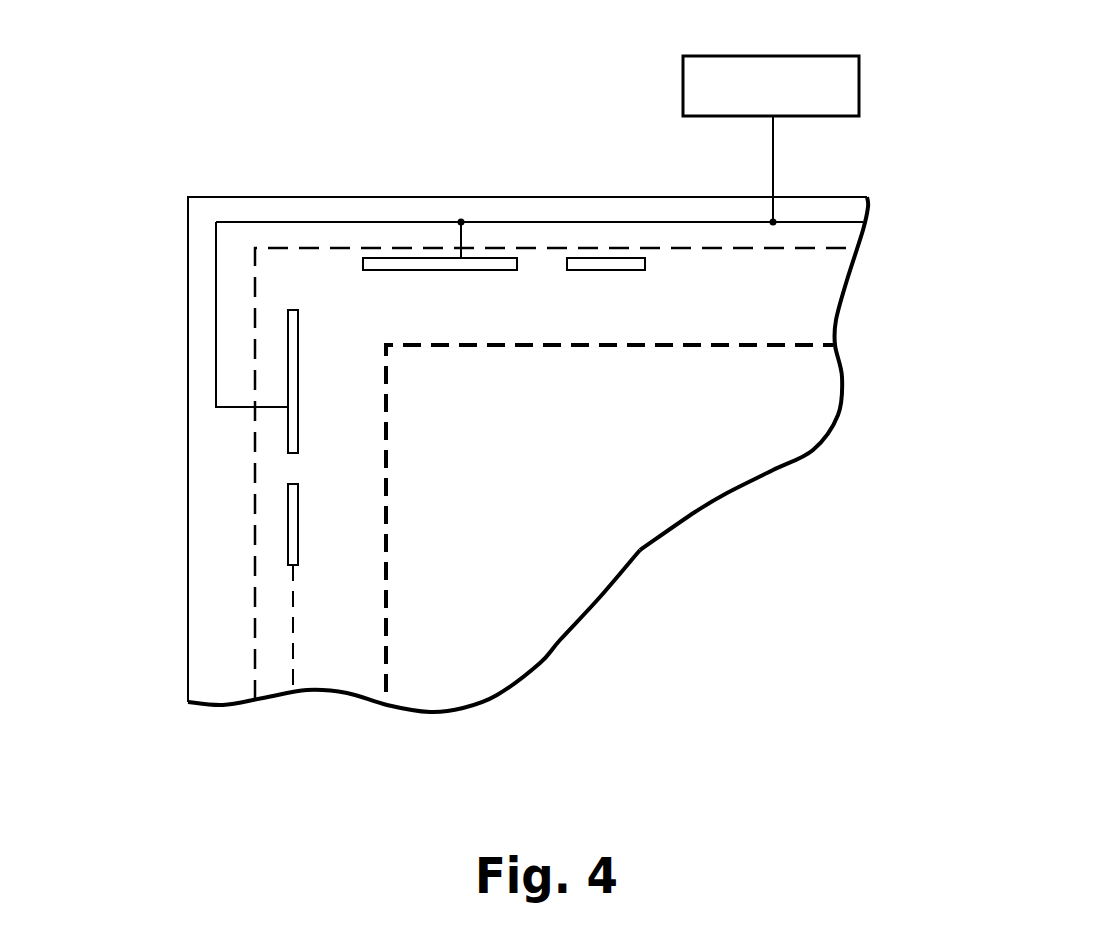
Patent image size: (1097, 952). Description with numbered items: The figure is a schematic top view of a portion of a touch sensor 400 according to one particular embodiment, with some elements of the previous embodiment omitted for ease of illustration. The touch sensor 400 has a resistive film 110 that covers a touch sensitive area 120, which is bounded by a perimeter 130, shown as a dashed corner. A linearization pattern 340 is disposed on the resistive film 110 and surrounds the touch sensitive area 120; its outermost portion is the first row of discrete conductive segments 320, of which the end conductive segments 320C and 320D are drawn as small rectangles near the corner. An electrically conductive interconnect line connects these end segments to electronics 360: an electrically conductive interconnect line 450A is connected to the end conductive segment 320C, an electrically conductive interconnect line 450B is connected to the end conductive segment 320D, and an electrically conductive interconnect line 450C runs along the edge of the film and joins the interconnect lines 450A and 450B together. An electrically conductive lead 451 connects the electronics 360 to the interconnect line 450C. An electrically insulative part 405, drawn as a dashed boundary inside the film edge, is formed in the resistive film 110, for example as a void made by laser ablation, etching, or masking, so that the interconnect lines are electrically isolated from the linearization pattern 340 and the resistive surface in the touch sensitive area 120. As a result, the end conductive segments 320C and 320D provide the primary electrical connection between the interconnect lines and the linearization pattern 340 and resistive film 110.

The touch sensor 400 is at (100, 117).
The resistive film 110 is at (546, 670).
The touch sensitive area 120 is at (698, 513).
The perimeter 130 is at (748, 345).
The electrically insulative part 405 is at (253, 302).
The first row of discrete conductive segments 320 is at (292, 647).
The end conductive segment 320C is at (418, 258).
The end conductive segment 320D is at (287, 357).
The linearization pattern 340 is at (268, 592).
The electrically conductive interconnect line 450A is at (462, 256).
The electrically conductive interconnect line 450B is at (235, 408).
The electrically conductive interconnect line 450C is at (333, 222).
The electrically conductive lead 451 is at (773, 170).
The electronics 360 is at (860, 90).